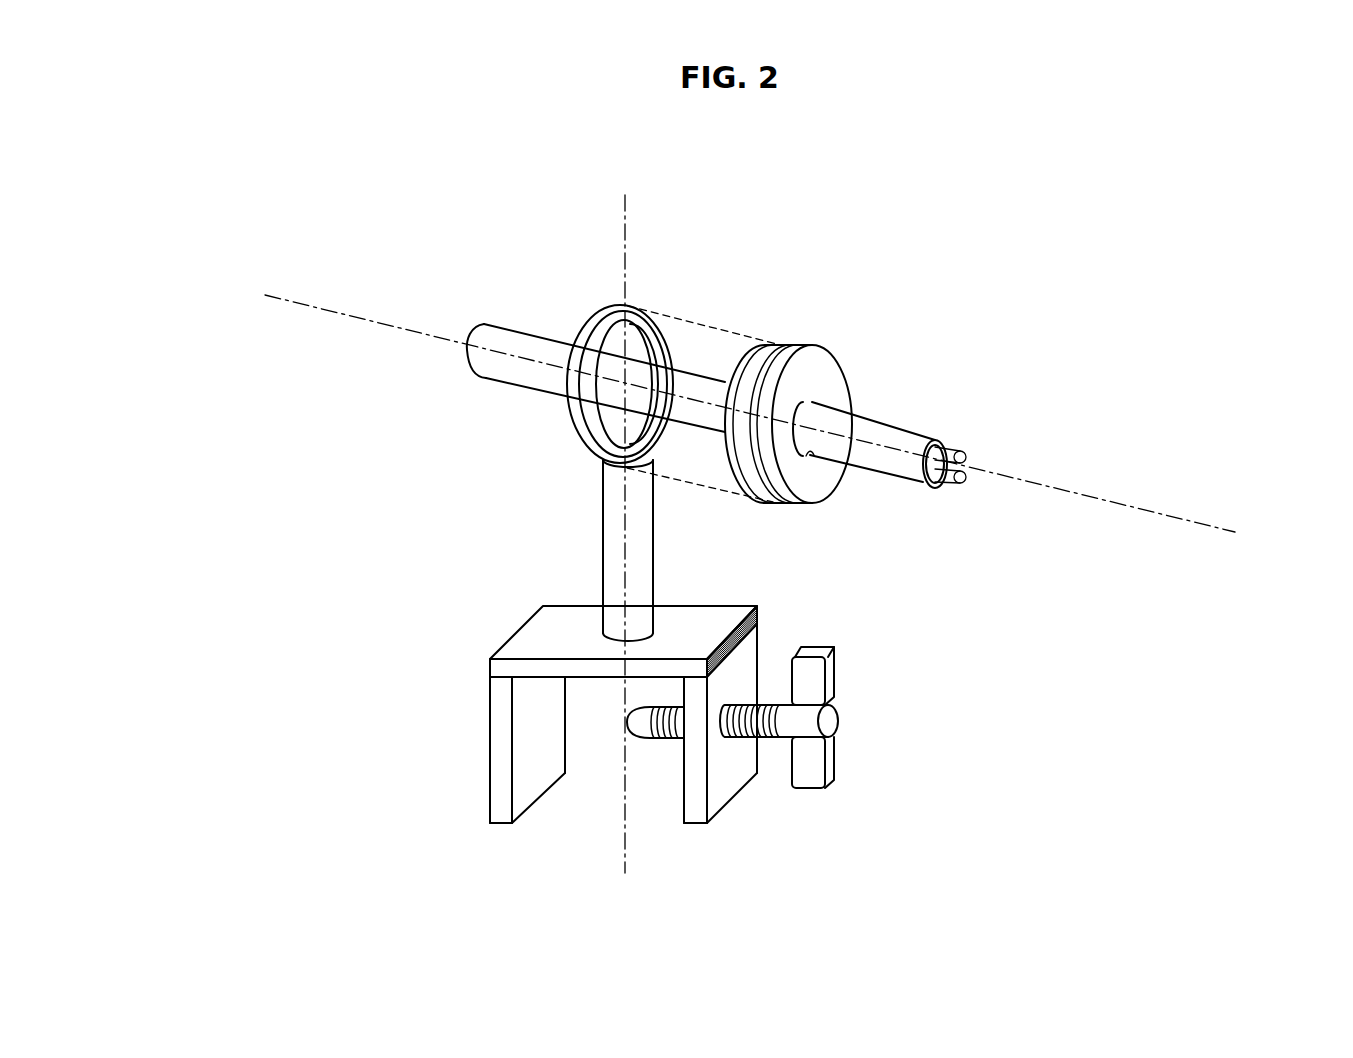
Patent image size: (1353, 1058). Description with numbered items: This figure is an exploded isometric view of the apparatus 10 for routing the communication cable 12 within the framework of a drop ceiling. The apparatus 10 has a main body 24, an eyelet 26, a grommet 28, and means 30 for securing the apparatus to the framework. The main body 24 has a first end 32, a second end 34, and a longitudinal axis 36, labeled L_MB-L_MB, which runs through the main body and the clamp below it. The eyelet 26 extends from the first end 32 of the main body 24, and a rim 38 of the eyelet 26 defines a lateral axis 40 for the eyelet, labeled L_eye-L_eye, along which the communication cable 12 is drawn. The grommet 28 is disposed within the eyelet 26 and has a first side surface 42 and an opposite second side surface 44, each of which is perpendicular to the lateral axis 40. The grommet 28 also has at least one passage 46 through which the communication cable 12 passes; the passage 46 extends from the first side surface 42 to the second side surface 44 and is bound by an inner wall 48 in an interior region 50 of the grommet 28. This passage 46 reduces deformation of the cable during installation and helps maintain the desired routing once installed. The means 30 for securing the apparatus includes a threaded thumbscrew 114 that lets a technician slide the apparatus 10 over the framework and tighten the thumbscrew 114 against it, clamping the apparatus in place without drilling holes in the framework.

The apparatus 10 is at (853, 236).
The communication cable 12 is at (913, 435).
The main body 24 is at (606, 550).
The eyelet 26 is at (604, 372).
The grommet 28 is at (799, 438).
The means for securing the apparatus 30 is at (708, 720).
The first end 32 is at (612, 477).
The second end 34 is at (616, 616).
The longitudinal axis 36 is at (627, 251).
The rim 38 is at (577, 407).
The lateral axis 40 is at (427, 334).
The first side surface 42 is at (793, 362).
The second side surface 44 is at (741, 482).
The passage 46 is at (813, 403).
The inner wall 48 is at (812, 457).
The interior region 50 is at (778, 460).
The threaded thumbscrew 114 is at (808, 772).